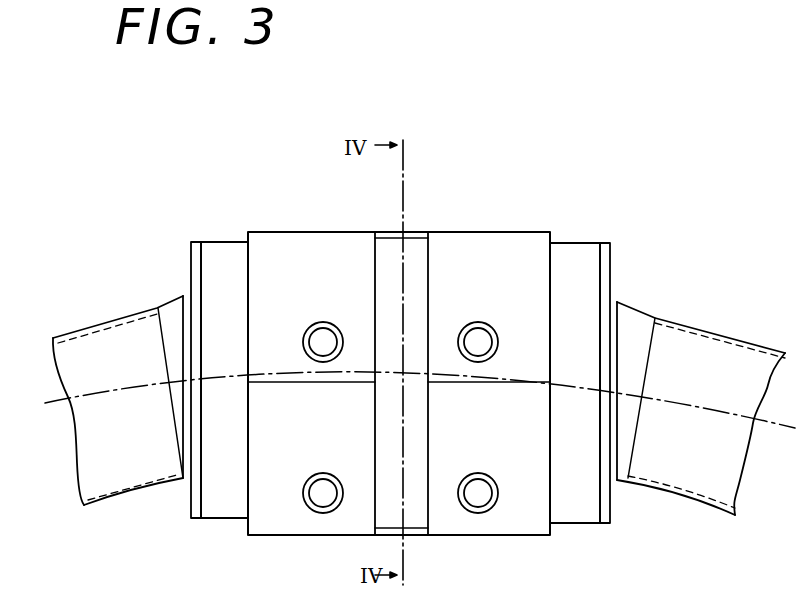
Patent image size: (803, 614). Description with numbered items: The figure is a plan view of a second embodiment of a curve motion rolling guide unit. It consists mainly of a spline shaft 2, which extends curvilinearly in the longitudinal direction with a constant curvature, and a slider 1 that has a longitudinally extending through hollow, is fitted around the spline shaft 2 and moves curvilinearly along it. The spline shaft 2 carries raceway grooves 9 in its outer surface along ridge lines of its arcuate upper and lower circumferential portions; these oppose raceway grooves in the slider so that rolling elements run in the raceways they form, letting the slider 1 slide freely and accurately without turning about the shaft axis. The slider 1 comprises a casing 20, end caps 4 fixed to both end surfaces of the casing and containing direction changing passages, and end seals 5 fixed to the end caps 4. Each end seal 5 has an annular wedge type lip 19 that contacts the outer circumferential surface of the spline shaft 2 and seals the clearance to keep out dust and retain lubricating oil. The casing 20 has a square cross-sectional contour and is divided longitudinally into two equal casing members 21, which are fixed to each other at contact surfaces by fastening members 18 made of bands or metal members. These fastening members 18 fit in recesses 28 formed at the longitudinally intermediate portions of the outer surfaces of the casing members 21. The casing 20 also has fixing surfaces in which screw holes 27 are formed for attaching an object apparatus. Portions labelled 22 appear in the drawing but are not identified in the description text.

The slider 1 is at (428, 212).
The spline shaft 2 is at (92, 390).
The end cap 4 is at (235, 280).
The end seal 5 is at (195, 267).
The raceway groove 9 is at (108, 497).
The fastening member 18 is at (415, 247).
The lip 19 is at (177, 402).
The casing 20 is at (490, 245).
The casing member 21 is at (325, 258).
The block segment 22 is at (262, 267).
The screw hole 27 is at (478, 338).
The recess 28 is at (378, 290).